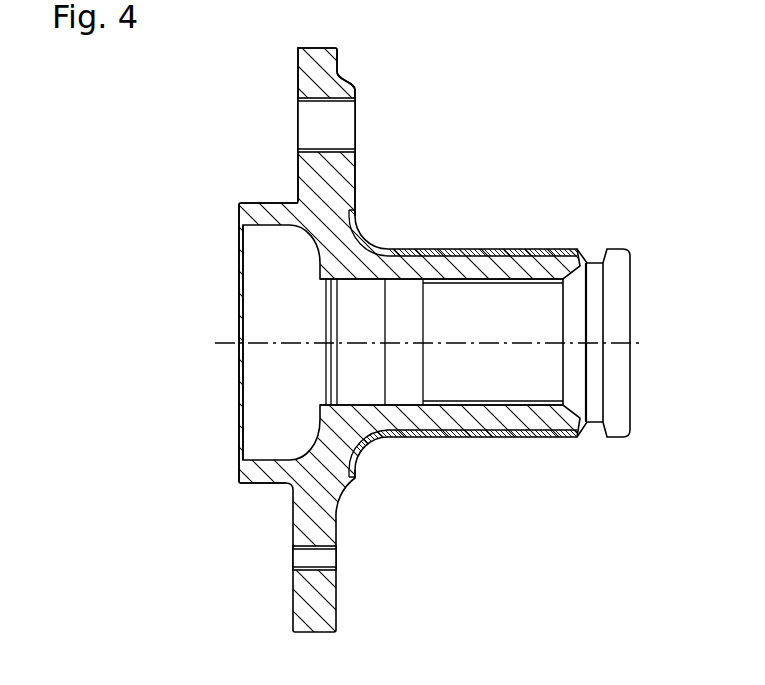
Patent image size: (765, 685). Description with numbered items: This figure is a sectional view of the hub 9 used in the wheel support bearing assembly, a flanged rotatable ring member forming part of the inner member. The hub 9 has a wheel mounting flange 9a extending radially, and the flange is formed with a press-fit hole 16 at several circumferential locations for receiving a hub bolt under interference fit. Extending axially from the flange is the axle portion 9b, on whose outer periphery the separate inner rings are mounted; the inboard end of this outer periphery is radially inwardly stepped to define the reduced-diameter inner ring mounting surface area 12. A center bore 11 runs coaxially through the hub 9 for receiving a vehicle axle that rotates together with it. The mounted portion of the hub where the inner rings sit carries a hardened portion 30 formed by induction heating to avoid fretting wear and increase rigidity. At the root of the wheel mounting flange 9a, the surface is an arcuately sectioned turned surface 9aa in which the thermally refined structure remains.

The hub 9 is at (509, 126).
The wheel mounting flange 9a is at (322, 57).
The turned surface 9aa is at (296, 197).
The axle portion 9b is at (525, 266).
The center bore 11 is at (460, 398).
The inner ring mounting surface area 12 is at (558, 249).
The press-fit hole 16 is at (324, 106).
The hardened portion 30 is at (517, 438).